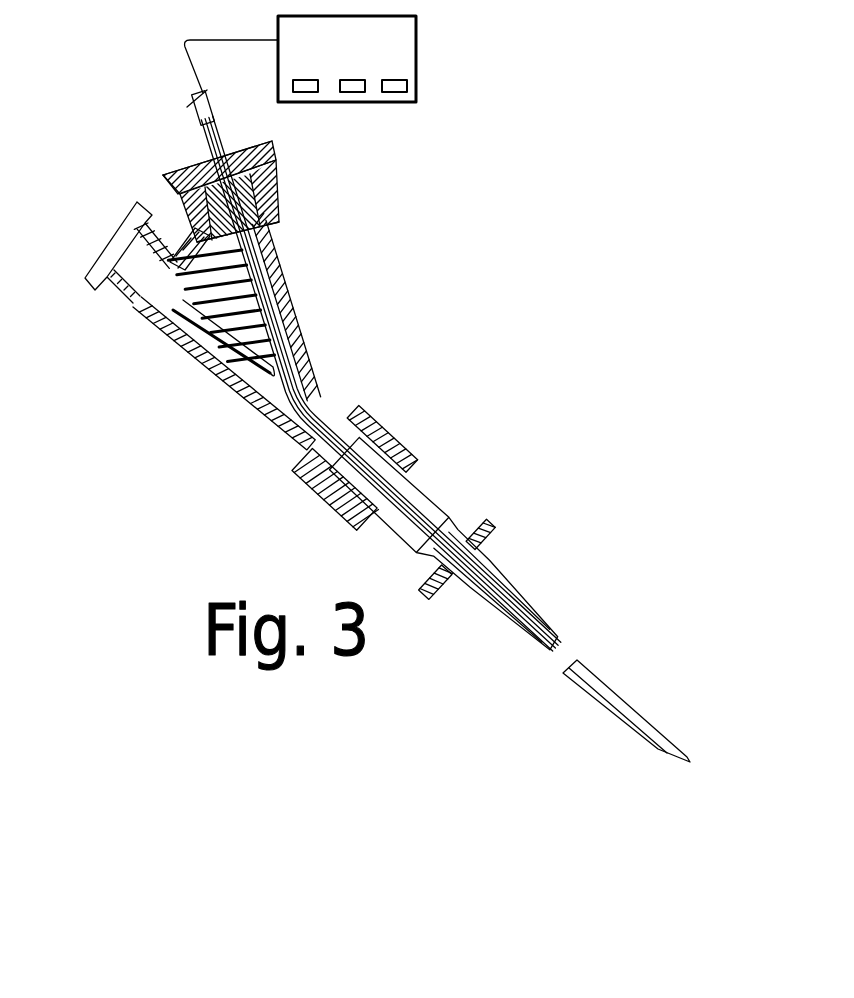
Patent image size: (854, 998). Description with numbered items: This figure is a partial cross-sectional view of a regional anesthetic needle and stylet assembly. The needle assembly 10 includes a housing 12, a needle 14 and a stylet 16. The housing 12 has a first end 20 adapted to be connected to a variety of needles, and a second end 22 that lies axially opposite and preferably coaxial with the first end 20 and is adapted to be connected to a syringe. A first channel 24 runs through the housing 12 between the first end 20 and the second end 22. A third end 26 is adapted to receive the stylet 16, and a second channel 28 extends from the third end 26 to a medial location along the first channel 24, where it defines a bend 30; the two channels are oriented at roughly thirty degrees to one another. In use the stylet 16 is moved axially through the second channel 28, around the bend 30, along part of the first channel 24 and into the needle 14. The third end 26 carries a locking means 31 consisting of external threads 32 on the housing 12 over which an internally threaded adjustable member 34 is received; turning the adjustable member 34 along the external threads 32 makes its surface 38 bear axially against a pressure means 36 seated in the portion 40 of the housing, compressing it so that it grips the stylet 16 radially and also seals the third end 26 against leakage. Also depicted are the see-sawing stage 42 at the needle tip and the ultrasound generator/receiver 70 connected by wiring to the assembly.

The needle assembly 10 is at (322, 337).
The housing 12 is at (320, 367).
The needle 14 is at (540, 612).
The stylet 16 is at (288, 309).
The first end 20 is at (393, 455).
The second end 22 is at (93, 262).
The first channel 24 is at (210, 361).
The third end 26 is at (290, 166).
The second channel 28 is at (297, 363).
The bend 30 is at (314, 401).
The locking means 31 is at (158, 181).
The external threads 32 is at (282, 199).
The adjustable member 34 is at (249, 160).
The pressure means 36 is at (264, 224).
The surface 38 is at (249, 148).
The portion of housing 40 is at (170, 318).
The see-sawing stage 42 is at (663, 757).
The ultrasound generator/receiver 70 is at (397, 50).